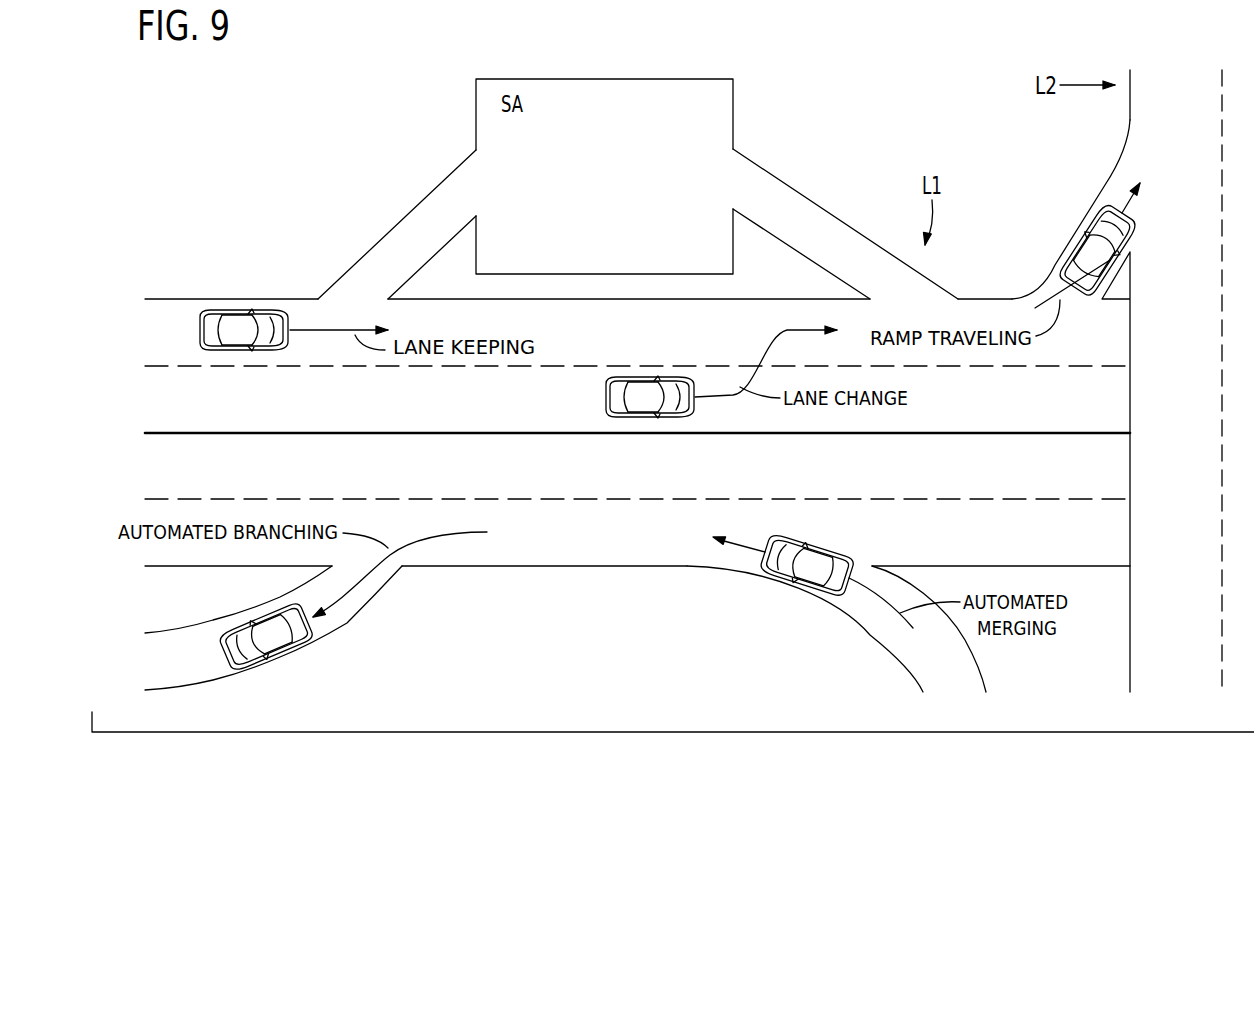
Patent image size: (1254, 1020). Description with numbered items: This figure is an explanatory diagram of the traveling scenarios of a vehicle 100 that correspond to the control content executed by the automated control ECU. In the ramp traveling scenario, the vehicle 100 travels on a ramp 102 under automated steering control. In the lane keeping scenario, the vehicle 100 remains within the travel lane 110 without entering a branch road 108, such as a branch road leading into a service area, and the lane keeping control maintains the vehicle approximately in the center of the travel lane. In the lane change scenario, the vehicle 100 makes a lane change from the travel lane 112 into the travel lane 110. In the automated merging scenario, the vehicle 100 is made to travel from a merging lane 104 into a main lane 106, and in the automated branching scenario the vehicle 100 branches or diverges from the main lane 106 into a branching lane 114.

The vehicle 100 is at (233, 327).
The ramp 102 is at (1050, 273).
The merging lane 104 is at (880, 622).
The main lane 106 is at (582, 540).
The branch road 108 is at (442, 203).
The travel lane 110 is at (168, 330).
The travel lane 112 is at (168, 401).
The branching lane 114 is at (363, 603).